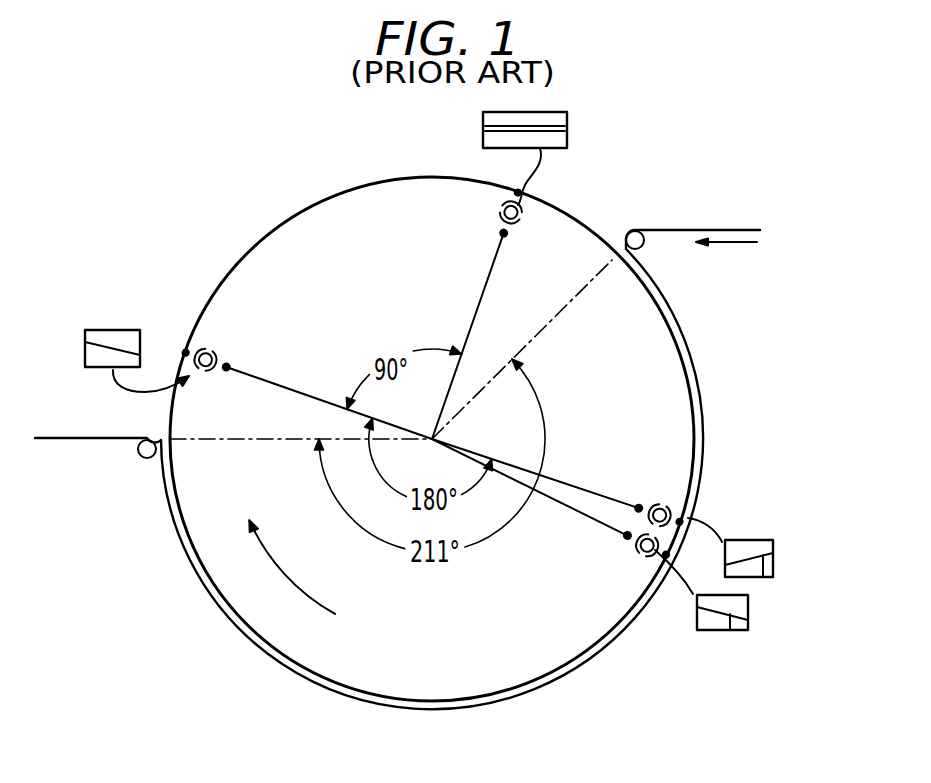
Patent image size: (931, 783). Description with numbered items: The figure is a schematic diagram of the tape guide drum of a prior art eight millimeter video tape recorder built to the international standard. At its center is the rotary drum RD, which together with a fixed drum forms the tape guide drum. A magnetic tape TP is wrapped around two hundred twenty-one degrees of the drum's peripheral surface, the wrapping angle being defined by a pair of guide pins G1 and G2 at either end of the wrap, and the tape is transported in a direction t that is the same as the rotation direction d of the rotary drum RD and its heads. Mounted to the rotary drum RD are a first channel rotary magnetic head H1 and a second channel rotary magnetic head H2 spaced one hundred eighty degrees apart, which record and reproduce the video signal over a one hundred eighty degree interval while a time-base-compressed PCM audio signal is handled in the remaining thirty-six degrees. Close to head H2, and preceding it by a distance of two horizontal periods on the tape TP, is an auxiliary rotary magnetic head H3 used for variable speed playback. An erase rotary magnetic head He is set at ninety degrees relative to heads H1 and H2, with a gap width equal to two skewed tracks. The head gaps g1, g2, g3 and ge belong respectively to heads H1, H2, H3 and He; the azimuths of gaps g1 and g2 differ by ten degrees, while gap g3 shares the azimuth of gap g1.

The rotary drum RD is at (283, 223).
The magnetic tape TP is at (690, 229).
The tape transport direction t is at (757, 242).
The guide pin G1 is at (146, 458).
The guide pin G2 is at (642, 247).
The first channel rotary magnetic head H1 is at (204, 348).
The erase rotary magnetic head He is at (524, 208).
The second channel rotary magnetic head H2 is at (682, 507).
The auxiliary rotary magnetic head H3 is at (634, 572).
The head gap of erase rotary magnetic head ge is at (483, 122).
The head gap of first channel rotary magnetic head g1 is at (109, 342).
The head gap of second channel rotary magnetic head g2 is at (760, 577).
The head gap of auxiliary rotary magnetic head g3 is at (727, 630).
The rotation direction d is at (305, 593).